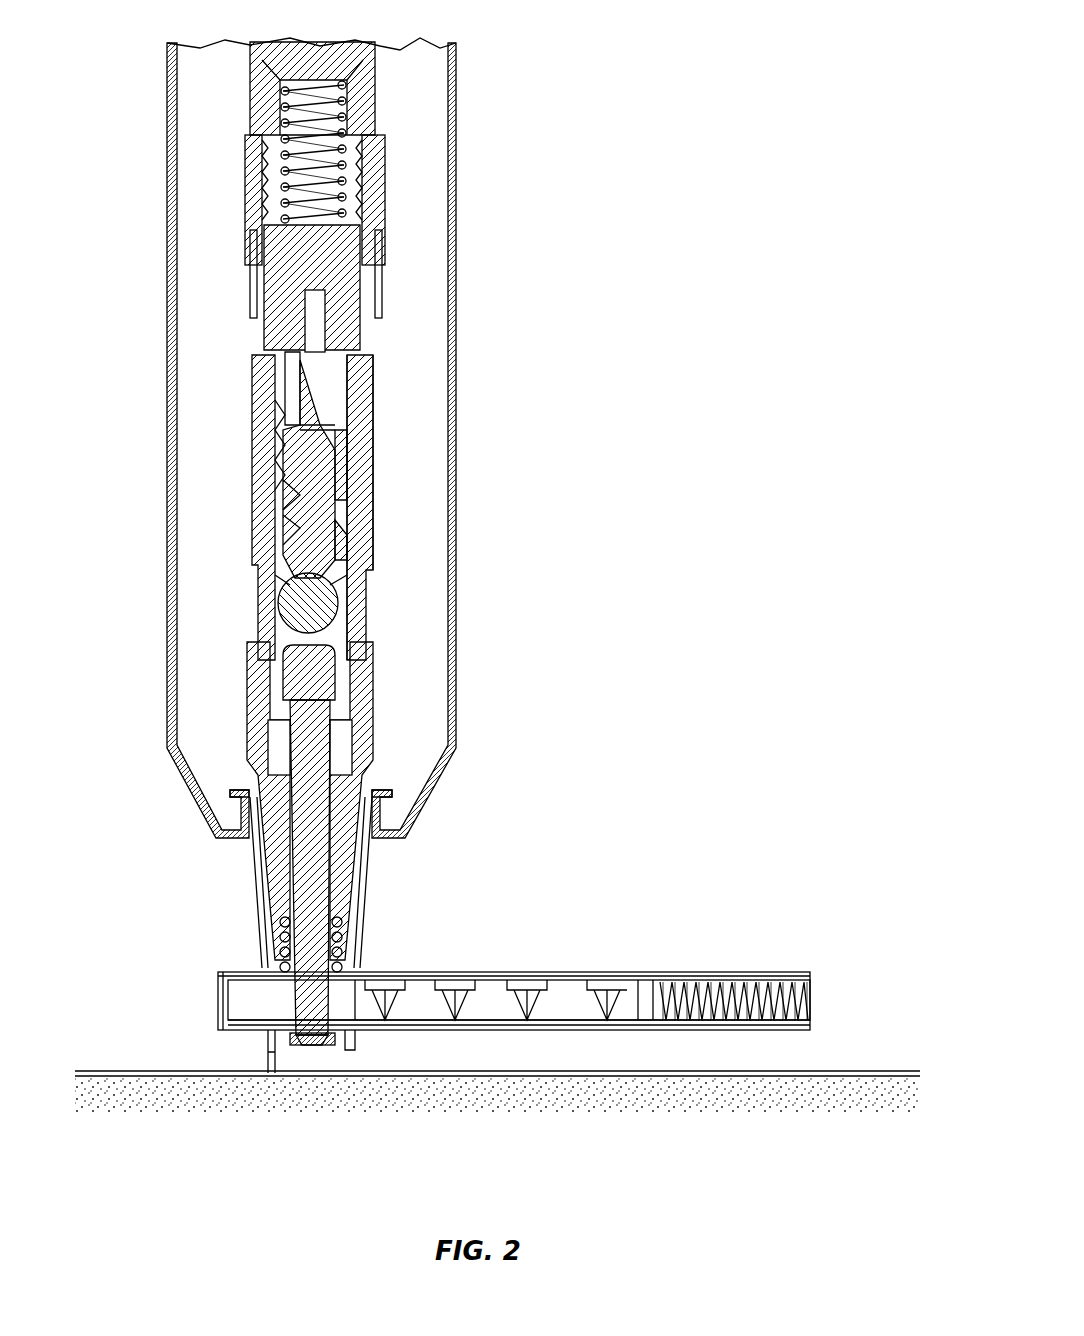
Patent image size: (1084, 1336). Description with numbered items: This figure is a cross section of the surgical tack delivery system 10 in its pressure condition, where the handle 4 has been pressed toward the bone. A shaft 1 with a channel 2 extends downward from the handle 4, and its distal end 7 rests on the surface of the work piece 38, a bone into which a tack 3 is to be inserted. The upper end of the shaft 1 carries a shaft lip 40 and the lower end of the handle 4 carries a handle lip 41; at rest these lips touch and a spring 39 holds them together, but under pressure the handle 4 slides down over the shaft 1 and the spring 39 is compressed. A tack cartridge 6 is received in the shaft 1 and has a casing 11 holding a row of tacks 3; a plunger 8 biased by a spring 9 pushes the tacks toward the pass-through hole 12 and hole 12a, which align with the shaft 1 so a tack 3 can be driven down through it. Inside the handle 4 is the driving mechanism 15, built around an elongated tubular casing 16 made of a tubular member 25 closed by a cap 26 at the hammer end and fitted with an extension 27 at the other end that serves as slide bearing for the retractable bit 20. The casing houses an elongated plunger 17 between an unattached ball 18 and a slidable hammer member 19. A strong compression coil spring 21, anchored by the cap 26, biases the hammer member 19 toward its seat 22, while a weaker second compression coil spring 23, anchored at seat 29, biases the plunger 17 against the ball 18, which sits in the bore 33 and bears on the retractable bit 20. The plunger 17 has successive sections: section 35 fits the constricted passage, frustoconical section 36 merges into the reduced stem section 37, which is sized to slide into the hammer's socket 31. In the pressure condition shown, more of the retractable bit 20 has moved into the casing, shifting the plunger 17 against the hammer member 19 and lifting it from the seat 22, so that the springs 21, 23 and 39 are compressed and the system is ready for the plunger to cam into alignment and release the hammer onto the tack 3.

The shaft 1 is at (365, 912).
The channel 2 is at (270, 1058).
The tack 3 is at (555, 975).
The handle 4 is at (455, 520).
The tack cartridge 6 is at (835, 975).
The distal end 7 is at (305, 1045).
The plunger 8 is at (657, 975).
The spring 9 is at (740, 975).
The surgical tack delivery system 10 is at (697, 270).
The casing 11 is at (575, 1028).
The hole 12 is at (295, 983).
The hole 12a is at (327, 1033).
The driving mechanism 15 is at (395, 212).
The elongated tubular casing 16 is at (245, 405).
The elongated plunger 17 is at (315, 475).
The unattached ball 18 is at (275, 598).
The slidable hammer member 19 is at (375, 268).
The retractable bit 20 is at (330, 735).
The compression coil spring 21 is at (300, 128).
The seat 22 is at (368, 397).
The second compression coil spring 23 is at (345, 540).
The tubular member 25 is at (300, 532).
The cap 26 is at (268, 72).
The extension 27 is at (265, 860).
The seat 29 is at (305, 457).
The socket 31 is at (320, 343).
The bore 33 is at (335, 592).
The section 35 is at (298, 503).
The section 36 is at (352, 442).
The stem section 37 is at (268, 368).
The work piece 38 is at (815, 1085).
The spring 39 is at (288, 925).
The shaft lip 40 is at (238, 793).
The handle lip 41 is at (385, 838).